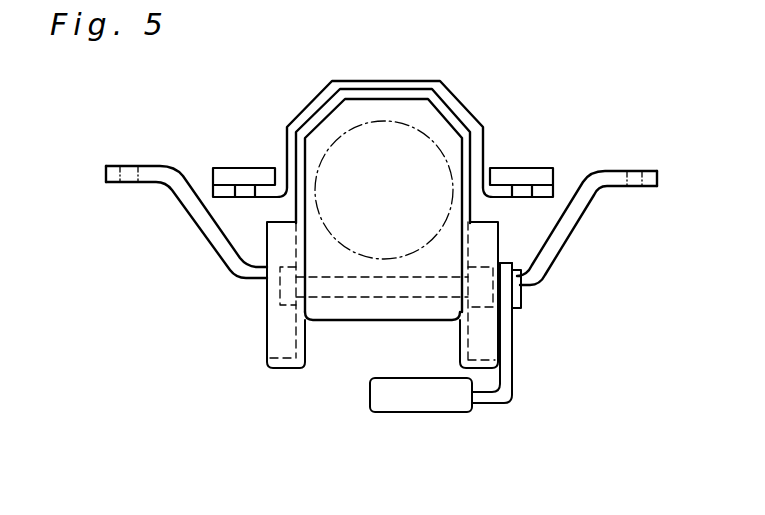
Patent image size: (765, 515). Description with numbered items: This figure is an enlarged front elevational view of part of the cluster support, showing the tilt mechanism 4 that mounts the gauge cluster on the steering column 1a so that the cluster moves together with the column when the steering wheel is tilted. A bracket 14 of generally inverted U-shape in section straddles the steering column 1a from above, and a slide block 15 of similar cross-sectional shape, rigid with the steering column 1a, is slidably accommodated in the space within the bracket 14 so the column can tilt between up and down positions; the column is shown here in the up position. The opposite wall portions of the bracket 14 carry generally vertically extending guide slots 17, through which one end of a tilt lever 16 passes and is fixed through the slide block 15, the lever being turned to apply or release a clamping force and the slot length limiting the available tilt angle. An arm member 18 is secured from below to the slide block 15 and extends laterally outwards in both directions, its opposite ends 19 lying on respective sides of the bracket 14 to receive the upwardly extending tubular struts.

The steering column 1a is at (440, 128).
The tilt mechanism 4 is at (303, 384).
The bracket 14 is at (467, 206).
The slide block 15 is at (300, 331).
The tilt lever 16 is at (512, 350).
The guide slots 17 is at (465, 325).
The arm member 18 is at (197, 220).
The opposite ends 19 is at (157, 167).